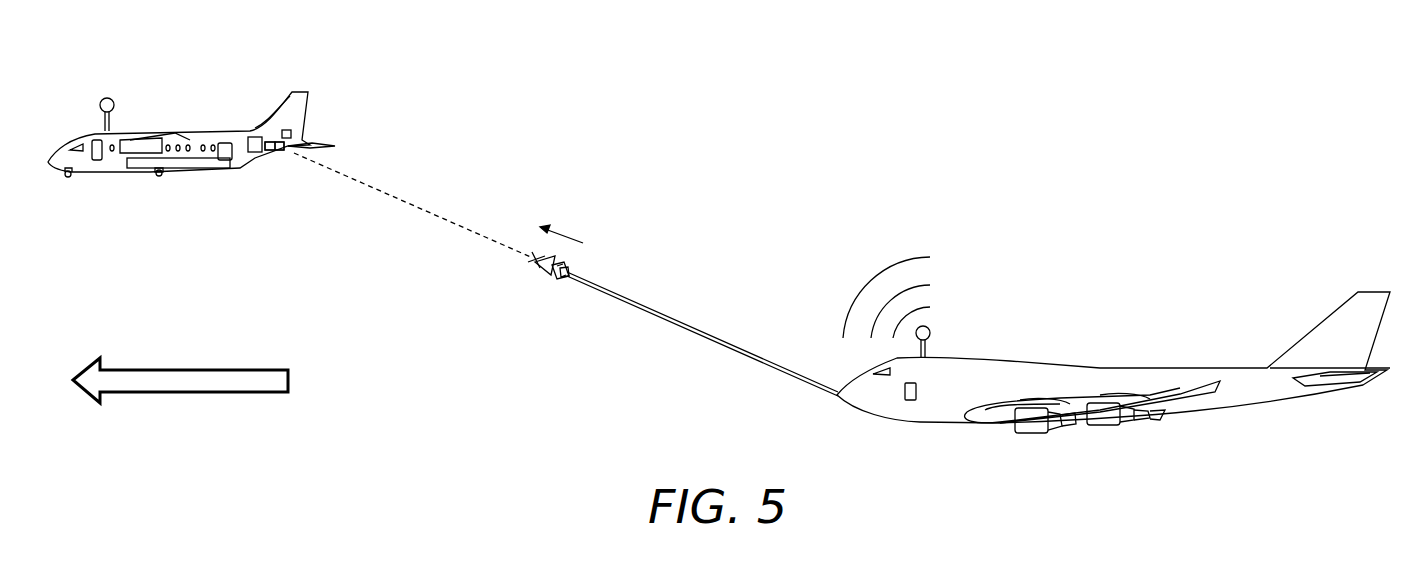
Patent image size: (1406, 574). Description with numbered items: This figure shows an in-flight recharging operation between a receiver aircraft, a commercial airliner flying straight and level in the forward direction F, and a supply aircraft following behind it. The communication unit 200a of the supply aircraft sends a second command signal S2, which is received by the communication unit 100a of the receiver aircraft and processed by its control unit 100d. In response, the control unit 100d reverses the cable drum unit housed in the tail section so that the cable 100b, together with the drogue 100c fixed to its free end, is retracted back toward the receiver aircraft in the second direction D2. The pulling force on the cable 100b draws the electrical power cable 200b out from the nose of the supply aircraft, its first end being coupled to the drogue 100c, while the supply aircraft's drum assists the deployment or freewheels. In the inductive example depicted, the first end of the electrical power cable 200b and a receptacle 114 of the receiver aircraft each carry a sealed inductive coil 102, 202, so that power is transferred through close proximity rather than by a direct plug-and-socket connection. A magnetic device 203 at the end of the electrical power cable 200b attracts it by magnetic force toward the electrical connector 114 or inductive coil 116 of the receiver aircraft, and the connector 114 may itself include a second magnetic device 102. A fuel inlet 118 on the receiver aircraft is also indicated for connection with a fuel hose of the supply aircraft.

The communication unit 100a is at (105, 97).
The cable 100b is at (397, 200).
The drogue 100c is at (540, 273).
The control unit 100d is at (258, 154).
The sealed inductive coil 102 is at (249, 150).
The receptacle 114 is at (302, 143).
The inductive coil 116 is at (277, 142).
The fuel inlet 118 is at (287, 130).
The communication unit 200a is at (935, 331).
The electrical power cable 200b is at (697, 337).
The sealed inductive coil 202 is at (580, 268).
The magnetic device 203 is at (564, 278).
The second direction D2 is at (563, 227).
The second command signal S2 is at (876, 272).
The forward direction F is at (180, 399).